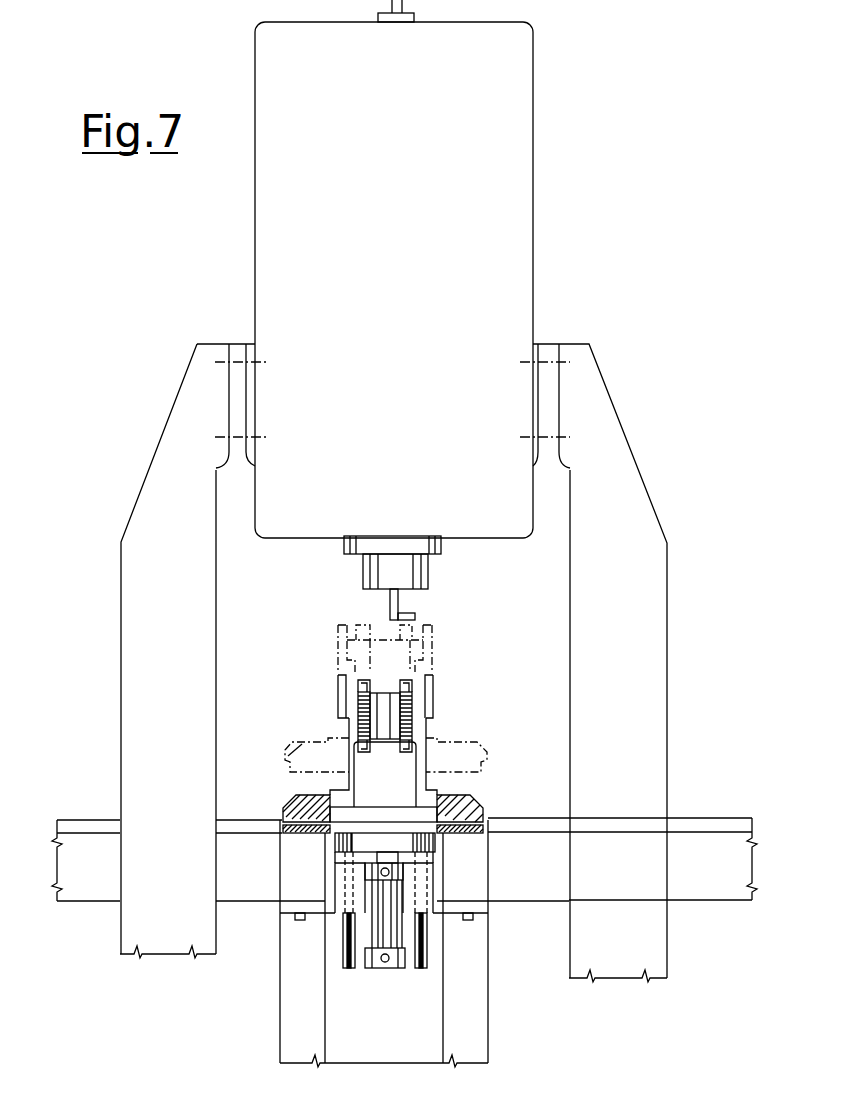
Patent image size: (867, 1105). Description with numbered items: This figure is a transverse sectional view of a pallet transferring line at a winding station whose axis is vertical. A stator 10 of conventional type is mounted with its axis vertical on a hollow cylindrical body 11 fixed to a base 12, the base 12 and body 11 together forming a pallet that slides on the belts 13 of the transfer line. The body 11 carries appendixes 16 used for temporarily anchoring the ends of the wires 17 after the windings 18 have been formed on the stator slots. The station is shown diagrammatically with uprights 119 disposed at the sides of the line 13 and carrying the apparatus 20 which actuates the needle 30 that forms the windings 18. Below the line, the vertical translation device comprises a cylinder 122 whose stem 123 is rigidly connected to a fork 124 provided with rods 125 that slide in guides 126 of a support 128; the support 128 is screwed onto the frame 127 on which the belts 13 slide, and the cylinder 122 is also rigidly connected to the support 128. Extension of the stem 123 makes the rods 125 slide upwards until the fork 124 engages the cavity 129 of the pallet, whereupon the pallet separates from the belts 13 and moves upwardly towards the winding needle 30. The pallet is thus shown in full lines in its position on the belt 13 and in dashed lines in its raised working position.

The stator 10 is at (382, 648).
The hollow cylindrical body 11 is at (425, 758).
The base 12 is at (292, 746).
The belts 13 is at (485, 842).
The appendixes 16 is at (343, 697).
The wires 17 is at (355, 636).
The windings 18 is at (363, 725).
The apparatus 20 is at (518, 250).
The winding needle 30 is at (400, 606).
The uprights 119 is at (645, 650).
The cylinder 122 is at (392, 968).
The stem 123 is at (400, 855).
The fork 124 is at (335, 848).
The rods 125 is at (343, 938).
The guides 126 is at (335, 884).
The frame 127 is at (293, 843).
The support 128 is at (430, 900).
The cavity 129 is at (283, 800).